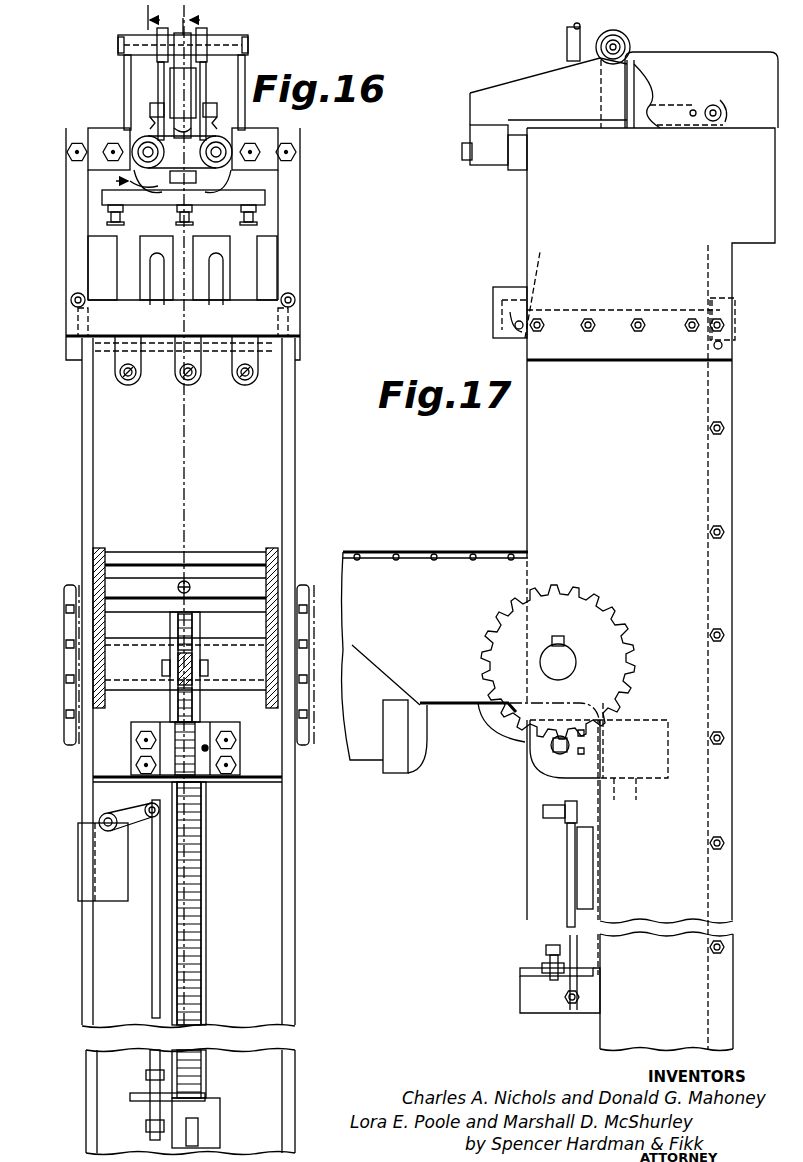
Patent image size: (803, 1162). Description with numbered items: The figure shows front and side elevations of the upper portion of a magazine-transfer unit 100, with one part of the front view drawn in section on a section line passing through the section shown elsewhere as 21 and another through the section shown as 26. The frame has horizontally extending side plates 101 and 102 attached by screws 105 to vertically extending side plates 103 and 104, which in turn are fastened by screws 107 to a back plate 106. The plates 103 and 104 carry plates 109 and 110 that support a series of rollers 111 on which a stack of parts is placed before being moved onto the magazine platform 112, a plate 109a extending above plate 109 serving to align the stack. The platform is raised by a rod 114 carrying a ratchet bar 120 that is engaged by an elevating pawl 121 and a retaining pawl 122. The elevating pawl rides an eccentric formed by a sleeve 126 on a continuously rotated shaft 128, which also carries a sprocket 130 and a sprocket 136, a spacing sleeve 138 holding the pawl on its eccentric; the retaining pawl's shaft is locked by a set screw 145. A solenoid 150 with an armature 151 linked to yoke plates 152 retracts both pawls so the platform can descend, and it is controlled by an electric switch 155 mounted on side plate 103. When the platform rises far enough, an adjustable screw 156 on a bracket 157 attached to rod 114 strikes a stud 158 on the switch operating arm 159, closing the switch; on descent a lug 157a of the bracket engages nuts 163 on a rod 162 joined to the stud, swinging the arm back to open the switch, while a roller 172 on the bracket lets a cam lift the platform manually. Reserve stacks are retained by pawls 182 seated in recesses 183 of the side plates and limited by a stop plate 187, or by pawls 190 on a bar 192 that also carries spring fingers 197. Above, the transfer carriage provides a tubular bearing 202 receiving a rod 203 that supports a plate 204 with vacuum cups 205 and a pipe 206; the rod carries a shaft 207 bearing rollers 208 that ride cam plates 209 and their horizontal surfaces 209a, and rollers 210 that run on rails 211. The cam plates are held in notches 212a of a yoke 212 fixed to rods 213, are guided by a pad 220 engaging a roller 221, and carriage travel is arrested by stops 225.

In FIG. 16, the magazine-transfer unit 100 is at (66, 130).
In FIG. 17, the magazine-transfer unit 100 is at (470, 95).
In FIG. 16, the horizontal side plate 101 is at (66, 232).
In FIG. 16, the horizontal side plate 102 is at (300, 238).
In FIG. 17, the horizontal side plate 102 is at (527, 242).
In FIG. 16, the vertical side plate 103 is at (82, 477).
In FIG. 16, the vertical side plate 104 is at (295, 454).
In FIG. 17, the vertical side plate 104 is at (527, 501).
In FIG. 17, the screws 105 is at (592, 320).
In FIG. 16, the back plate 106 is at (284, 232).
In FIG. 17, the back plate 106 is at (722, 488).
In FIG. 17, the screws 107 is at (710, 534).
In FIG. 16, the plate 109 is at (93, 556).
In FIG. 16, the aligning plate 109a is at (82, 428).
In FIG. 16, the plate 110 is at (273, 553).
In FIG. 17, the plate 110 is at (377, 553).
In FIG. 16, the rollers 111 is at (167, 560).
In FIG. 17, the rollers 111 is at (744, 52).
In FIG. 16, the magazine platform 112 is at (134, 592).
In FIG. 16, the rod 114 is at (210, 967).
In FIG. 16, the ratchet bar 120 is at (196, 937).
In FIG. 16, the elevating pawl 121 is at (170, 634).
In FIG. 16, the retaining pawl 122 is at (180, 758).
In FIG. 16, the sleeve 126 is at (122, 702).
In FIG. 17, the shaft 128 is at (574, 652).
In FIG. 16, the sprocket 130 is at (64, 613).
In FIG. 16, the sprocket 136 is at (303, 592).
In FIG. 17, the sprocket 136 is at (583, 598).
In FIG. 16, the spacing sleeve 138 is at (244, 690).
In FIG. 16, the set screw 145 is at (210, 755).
In FIG. 17, the solenoid 150 is at (400, 760).
In FIG. 16, the armature 151 is at (172, 690).
In FIG. 17, the armature 151 is at (440, 714).
In FIG. 16, the yoke plates 152 is at (162, 657).
In FIG. 17, the yoke plates 152 is at (506, 724).
In FIG. 16, the electric switch 155 is at (78, 854).
In FIG. 17, the electric switch 155 is at (577, 865).
In FIG. 16, the adjustable screw 156 is at (146, 1075).
In FIG. 17, the adjustable screw 156 is at (546, 954).
In FIG. 16, the bracket 157 is at (200, 1107).
In FIG. 17, the bracket 157 is at (520, 1000).
In FIG. 16, the lug 157a is at (130, 1099).
In FIG. 17, the lug 157a is at (520, 984).
In FIG. 16, the stud 158 is at (152, 820).
In FIG. 17, the stud 158 is at (543, 812).
In FIG. 16, the operating arm 159 is at (122, 814).
In FIG. 17, the operating arm 159 is at (572, 810).
In FIG. 16, the rod 162 is at (152, 953).
In FIG. 17, the rod 162 is at (567, 894).
In FIG. 17, the nuts 163 is at (565, 997).
In FIG. 16, the roller 172 is at (198, 1132).
In FIG. 16, the pawls 182 is at (120, 300).
In FIG. 17, the pawls 182 is at (712, 304).
In FIG. 16, the recesses 183 is at (118, 266).
In FIG. 16, the stop plate 187 is at (180, 382).
In FIG. 17, the pawls 190 is at (536, 320).
In FIG. 16, the bar 192 is at (66, 331).
In FIG. 17, the bar 192 is at (493, 298).
In FIG. 16, the spring fingers 197 is at (216, 268).
In FIG. 17, the spring fingers 197 is at (538, 260).
In FIG. 16, the tubular bearing 202 is at (205, 97).
In FIG. 17, the tubular bearing 202 is at (608, 128).
In FIG. 16, the rod 203 is at (183, 85).
In FIG. 17, the rod 203 is at (636, 70).
In FIG. 16, the plate 204 is at (265, 196).
In FIG. 16, the vacuum cups 205 is at (170, 220).
In FIG. 17, the pipe 206 is at (567, 29).
In FIG. 16, the shaft 207 is at (118, 48).
In FIG. 17, the shaft 207 is at (628, 42).
In FIG. 16, the rollers 208 is at (185, 53).
In FIG. 17, the rollers 208 is at (611, 37).
In FIG. 16, the cam plates 209 is at (186, 101).
In FIG. 17, the cam plates 209 is at (520, 82).
In FIG. 17, the horizontal surfaces 209a is at (600, 64).
In FIG. 16, the rollers 210 is at (123, 34).
In FIG. 17, the rollers 210 is at (640, 58).
In FIG. 16, the rails 211 is at (124, 76).
In FIG. 17, the yoke 212 is at (480, 137).
In FIG. 16, the notches 212a is at (182, 187).
In FIG. 16, the rods 213 is at (179, 197).
In FIG. 17, the rods 213 is at (500, 172).
In FIG. 17, the pad 220 is at (722, 124).
In FIG. 17, the roller 221 is at (708, 104).
In FIG. 16, the stops 225 is at (108, 131).
In FIG. 17, the stops 225 is at (514, 182).
In FIG. 16, the section line 26 is at (135, 97).
In FIG. 16, the section line 21 is at (196, 808).